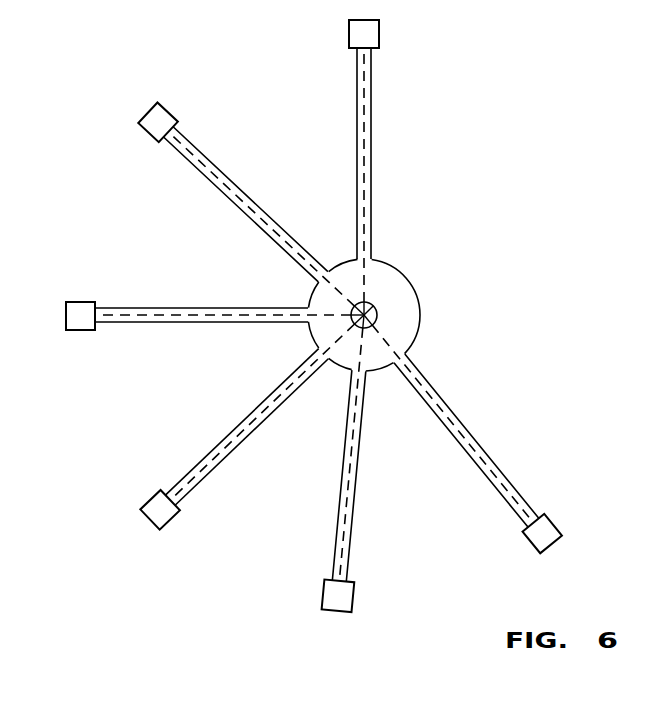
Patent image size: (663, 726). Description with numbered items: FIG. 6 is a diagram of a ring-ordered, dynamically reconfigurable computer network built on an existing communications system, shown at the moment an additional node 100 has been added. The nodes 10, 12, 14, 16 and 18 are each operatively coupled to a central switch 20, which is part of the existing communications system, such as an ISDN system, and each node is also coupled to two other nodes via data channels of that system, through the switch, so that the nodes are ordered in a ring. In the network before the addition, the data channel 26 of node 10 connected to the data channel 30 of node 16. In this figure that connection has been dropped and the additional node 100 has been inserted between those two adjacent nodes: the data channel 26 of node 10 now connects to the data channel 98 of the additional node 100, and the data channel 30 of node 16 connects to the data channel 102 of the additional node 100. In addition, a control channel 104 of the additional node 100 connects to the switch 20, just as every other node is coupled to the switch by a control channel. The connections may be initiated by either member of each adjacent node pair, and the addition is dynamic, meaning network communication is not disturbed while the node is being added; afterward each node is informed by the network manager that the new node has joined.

The node 10 is at (80, 301).
The node 12 is at (168, 108).
The node 14 is at (379, 27).
The node 16 is at (352, 597).
The node 18 is at (556, 522).
The switch 20 is at (420, 312).
The data channel 26 is at (185, 323).
The data channel 30 is at (333, 538).
The data channel 98 is at (189, 414).
The additional node 100 is at (149, 523).
The data channel 102 is at (265, 419).
The control channel 104 is at (178, 432).